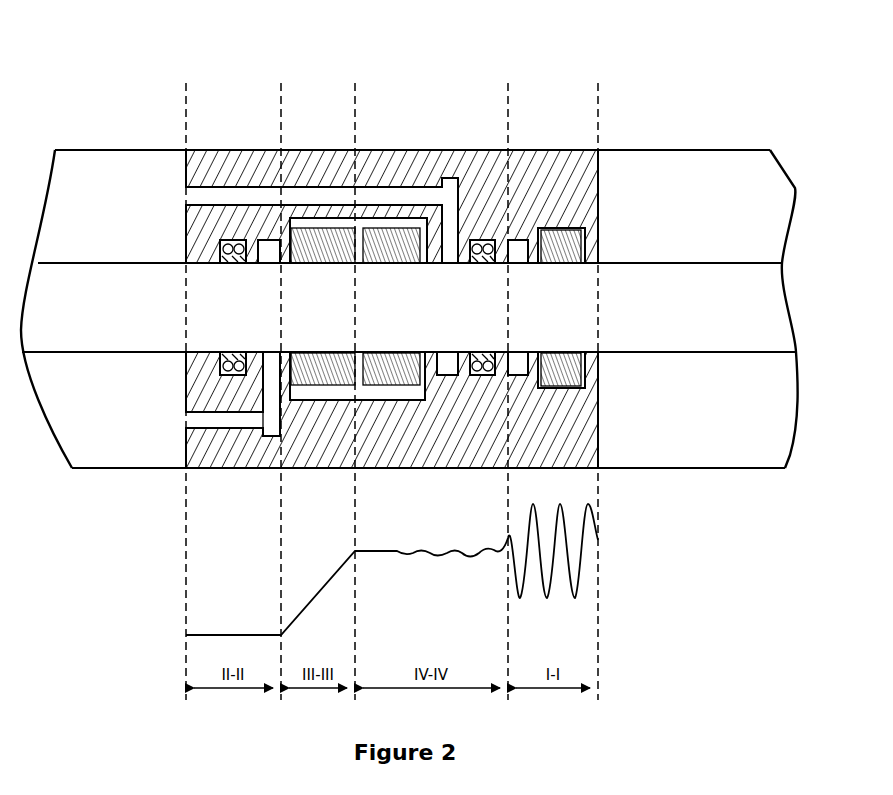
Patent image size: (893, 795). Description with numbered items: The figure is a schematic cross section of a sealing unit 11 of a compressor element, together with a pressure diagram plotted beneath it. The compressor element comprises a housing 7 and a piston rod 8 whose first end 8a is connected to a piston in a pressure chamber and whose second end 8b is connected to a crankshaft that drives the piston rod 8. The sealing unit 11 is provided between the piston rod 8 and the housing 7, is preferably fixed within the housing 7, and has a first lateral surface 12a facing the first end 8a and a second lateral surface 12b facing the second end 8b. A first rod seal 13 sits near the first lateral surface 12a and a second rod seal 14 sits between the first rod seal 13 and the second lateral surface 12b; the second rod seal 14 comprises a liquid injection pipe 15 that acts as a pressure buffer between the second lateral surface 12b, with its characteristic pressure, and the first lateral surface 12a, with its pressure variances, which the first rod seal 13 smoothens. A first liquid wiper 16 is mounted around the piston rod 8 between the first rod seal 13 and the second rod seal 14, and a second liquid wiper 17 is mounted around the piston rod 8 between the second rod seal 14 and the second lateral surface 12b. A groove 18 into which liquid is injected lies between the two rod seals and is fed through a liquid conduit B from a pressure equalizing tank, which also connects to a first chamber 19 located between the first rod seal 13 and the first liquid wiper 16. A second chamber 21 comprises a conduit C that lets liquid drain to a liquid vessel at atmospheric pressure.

The housing 7 is at (77, 148).
The piston rod 8 is at (622, 279).
The first end 8a is at (716, 281).
The second end 8b is at (96, 285).
The sealing unit 11 is at (614, 98).
The first lateral surface 12a is at (598, 178).
The second lateral surface 12b is at (182, 152).
The first rod seal 13 is at (598, 248).
The second rod seal 14 is at (300, 243).
The liquid injection pipe 15 is at (382, 243).
The first liquid wiper 16 is at (490, 236).
The second liquid wiper 17 is at (228, 243).
The groove 18 is at (462, 183).
The first chamber 19 is at (540, 230).
The second chamber 21 is at (267, 373).
The liquid conduit B is at (320, 193).
The conduit C is at (240, 421).